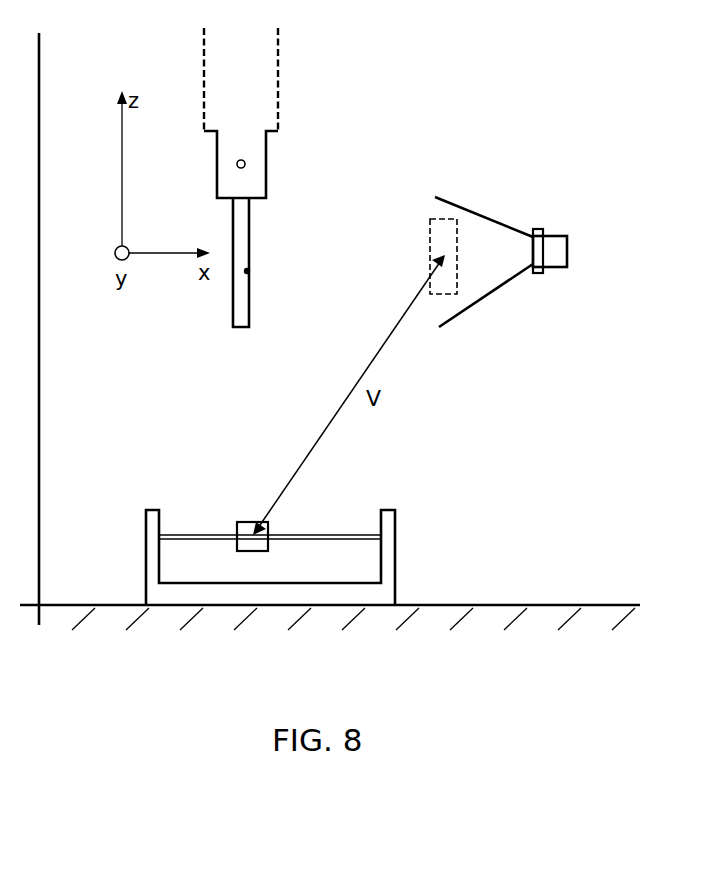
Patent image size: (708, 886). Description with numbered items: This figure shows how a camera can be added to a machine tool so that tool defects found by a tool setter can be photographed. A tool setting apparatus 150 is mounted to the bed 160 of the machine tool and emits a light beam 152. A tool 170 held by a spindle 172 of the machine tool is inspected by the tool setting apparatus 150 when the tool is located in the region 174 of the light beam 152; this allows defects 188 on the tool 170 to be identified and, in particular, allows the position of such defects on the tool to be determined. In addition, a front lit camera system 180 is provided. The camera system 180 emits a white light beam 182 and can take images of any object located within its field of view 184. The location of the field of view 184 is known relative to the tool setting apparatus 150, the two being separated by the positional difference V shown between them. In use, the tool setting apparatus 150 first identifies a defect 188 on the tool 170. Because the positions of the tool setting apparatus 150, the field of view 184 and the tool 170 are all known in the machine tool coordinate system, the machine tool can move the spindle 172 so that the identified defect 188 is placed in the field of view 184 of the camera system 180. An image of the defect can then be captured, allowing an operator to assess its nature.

The tool setting apparatus 150 is at (396, 548).
The light beam 152 is at (315, 533).
The bed 160 is at (348, 660).
The tool 170 is at (248, 238).
The spindle 172 is at (257, 165).
The region 174 is at (245, 522).
The camera system 180 is at (583, 223).
The white light beam 182 is at (478, 212).
The field of view 184 is at (430, 236).
The defects 188 is at (248, 271).